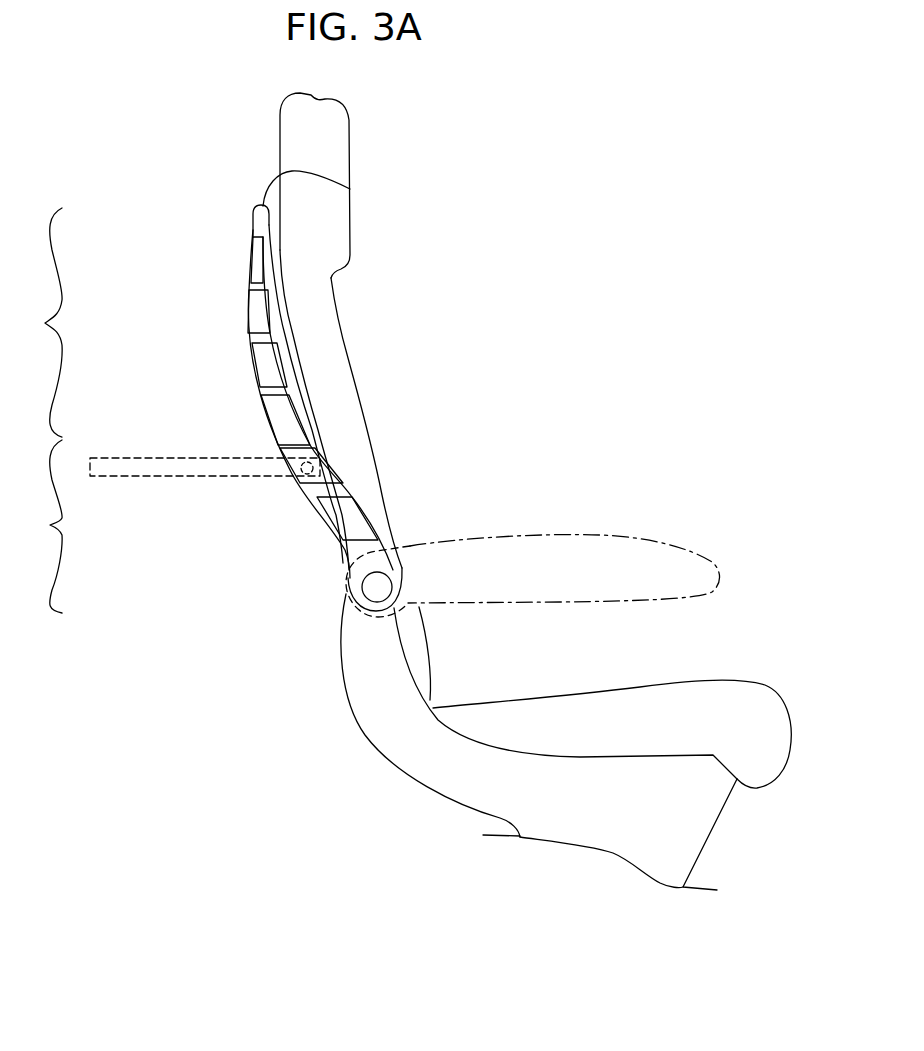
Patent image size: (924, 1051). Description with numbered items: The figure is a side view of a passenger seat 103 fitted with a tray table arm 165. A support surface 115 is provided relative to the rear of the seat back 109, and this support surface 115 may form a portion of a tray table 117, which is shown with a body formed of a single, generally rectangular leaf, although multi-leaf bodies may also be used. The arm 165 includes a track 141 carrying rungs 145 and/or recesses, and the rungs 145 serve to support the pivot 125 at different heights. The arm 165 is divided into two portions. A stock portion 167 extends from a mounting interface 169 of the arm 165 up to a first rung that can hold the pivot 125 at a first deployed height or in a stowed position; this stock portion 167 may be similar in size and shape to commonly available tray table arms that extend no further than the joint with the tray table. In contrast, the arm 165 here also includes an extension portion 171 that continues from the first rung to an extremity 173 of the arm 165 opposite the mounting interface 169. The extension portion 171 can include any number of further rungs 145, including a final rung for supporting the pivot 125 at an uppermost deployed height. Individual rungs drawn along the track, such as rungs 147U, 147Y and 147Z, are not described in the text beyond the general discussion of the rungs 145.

The passenger seat 103 is at (492, 152).
The seat back 109 is at (350, 140).
The support surface 115 is at (143, 457).
The tray table 117 is at (137, 509).
The pivot 125 is at (312, 462).
The track 141 is at (319, 661).
The rungs 145 is at (220, 271).
The frame element 147U is at (257, 252).
The frame element 147Y is at (330, 477).
The frame element 147Z is at (362, 533).
The arm 165 is at (234, 195).
The stock portion 167 is at (38, 526).
The mounting interface 169 is at (383, 589).
The extension portion 171 is at (38, 322).
The extremity 173 is at (350, 189).